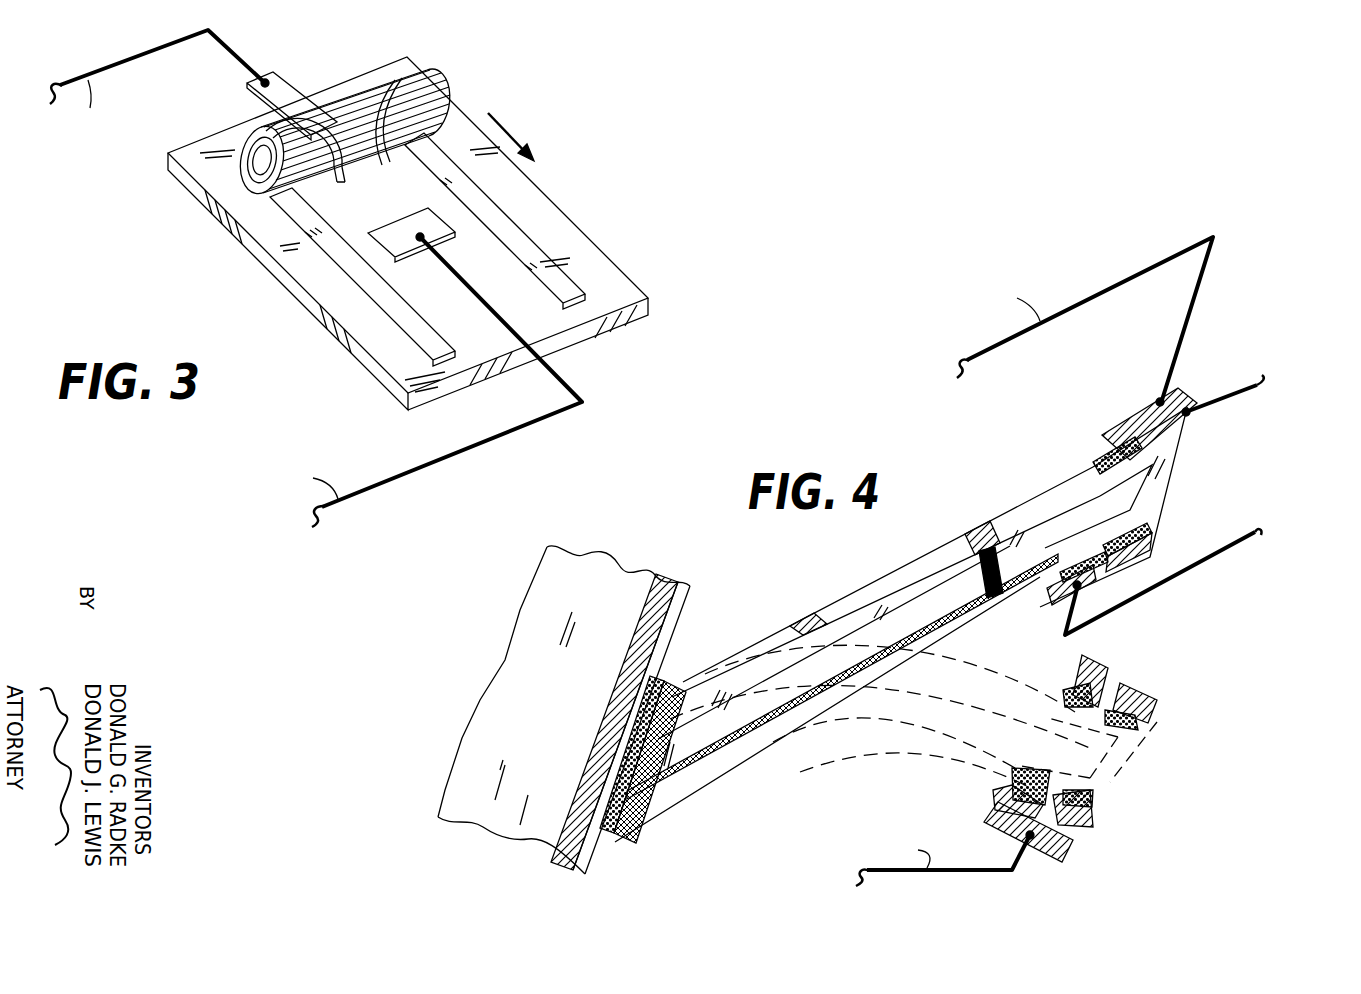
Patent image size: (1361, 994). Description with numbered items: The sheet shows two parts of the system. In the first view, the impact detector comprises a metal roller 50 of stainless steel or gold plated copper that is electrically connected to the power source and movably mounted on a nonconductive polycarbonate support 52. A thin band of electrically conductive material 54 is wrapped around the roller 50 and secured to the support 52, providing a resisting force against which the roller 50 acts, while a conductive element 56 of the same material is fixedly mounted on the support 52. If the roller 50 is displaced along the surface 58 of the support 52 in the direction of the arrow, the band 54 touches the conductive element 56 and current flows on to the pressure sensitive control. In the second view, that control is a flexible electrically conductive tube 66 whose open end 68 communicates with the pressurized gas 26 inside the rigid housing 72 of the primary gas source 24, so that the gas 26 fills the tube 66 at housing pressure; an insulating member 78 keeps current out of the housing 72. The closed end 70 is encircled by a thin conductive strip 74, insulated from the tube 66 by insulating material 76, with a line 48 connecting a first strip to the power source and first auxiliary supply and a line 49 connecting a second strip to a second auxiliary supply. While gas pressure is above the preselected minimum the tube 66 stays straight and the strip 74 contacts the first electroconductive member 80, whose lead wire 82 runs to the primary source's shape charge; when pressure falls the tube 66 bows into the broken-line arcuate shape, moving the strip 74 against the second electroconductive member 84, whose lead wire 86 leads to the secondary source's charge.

In FIG. 3, the roller 50 is at (420, 98).
In FIG. 3, the nonconductive support 52 is at (335, 333).
In FIG. 3, the band of electrically conductive material 54 is at (342, 122).
In FIG. 3, the conductive element 56 is at (437, 225).
In FIG. 3, the surface 58 is at (300, 272).
In FIG. 4, the primary gas source 24 is at (462, 737).
In FIG. 4, the pressurized gas 26 is at (567, 709).
In FIG. 4, the line 48 is at (1257, 383).
In FIG. 4, the line 49 is at (1250, 538).
In FIG. 4, the flexible electrically conductive tube 66 is at (928, 552).
In FIG. 4, the open end 68 is at (643, 770).
In FIG. 4, the closed end 70 is at (1166, 493).
In FIG. 4, the rigid housing 72 is at (679, 582).
In FIG. 4, the thin strip of electrically conductive material 74 is at (1188, 410).
In FIG. 4, the insulating material 76 is at (1092, 458).
In FIG. 4, the insulating member 78 is at (662, 676).
In FIG. 4, the first electroconductive member 80 is at (1158, 395).
In FIG. 4, the lead wire 82 is at (1082, 298).
In FIG. 4, the second electroconductive member 84 is at (1062, 852).
In FIG. 4, the lead wire 86 is at (912, 868).